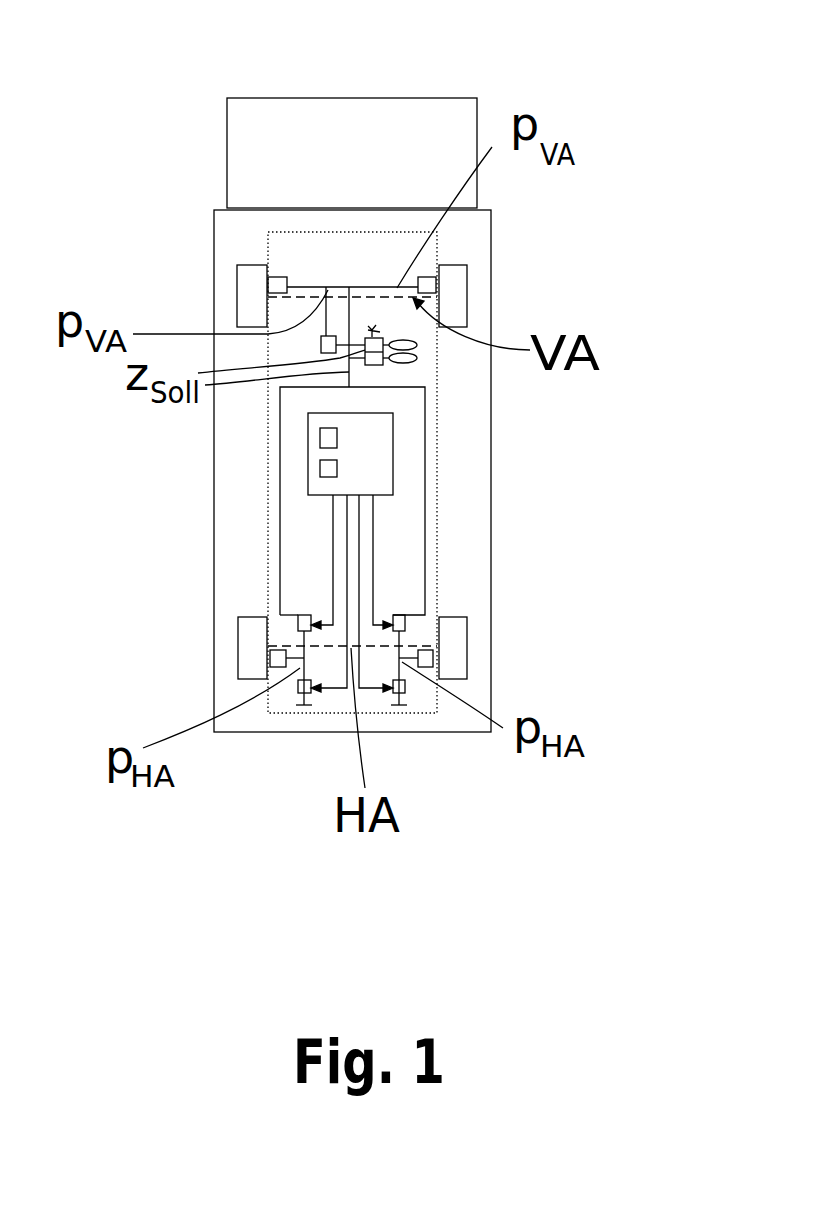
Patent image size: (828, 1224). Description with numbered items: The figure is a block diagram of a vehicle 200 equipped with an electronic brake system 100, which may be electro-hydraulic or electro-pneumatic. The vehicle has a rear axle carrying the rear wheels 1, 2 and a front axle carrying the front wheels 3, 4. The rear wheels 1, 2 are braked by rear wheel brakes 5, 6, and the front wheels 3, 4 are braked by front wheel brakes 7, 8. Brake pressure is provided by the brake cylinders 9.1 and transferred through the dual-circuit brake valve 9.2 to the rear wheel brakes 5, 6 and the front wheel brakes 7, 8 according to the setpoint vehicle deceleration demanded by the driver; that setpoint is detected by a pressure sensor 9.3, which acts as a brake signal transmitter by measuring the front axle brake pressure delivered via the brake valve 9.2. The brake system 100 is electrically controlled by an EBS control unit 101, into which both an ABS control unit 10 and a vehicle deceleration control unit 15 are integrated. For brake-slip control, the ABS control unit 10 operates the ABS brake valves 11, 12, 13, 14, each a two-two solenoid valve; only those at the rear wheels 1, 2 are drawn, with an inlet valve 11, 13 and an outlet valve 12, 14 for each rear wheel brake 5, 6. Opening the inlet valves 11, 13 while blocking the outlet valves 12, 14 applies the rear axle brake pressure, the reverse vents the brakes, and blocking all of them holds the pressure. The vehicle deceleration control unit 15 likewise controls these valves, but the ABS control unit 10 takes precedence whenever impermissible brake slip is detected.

The vehicle 200 is at (313, 97).
The brake system 100 is at (384, 232).
The rear wheel 1 is at (237, 616).
The rear wheel 2 is at (467, 616).
The front wheel 3 is at (237, 262).
The front wheel 4 is at (467, 265).
The rear wheel brake 5 is at (264, 662).
The rear wheel brake 6 is at (440, 661).
The front wheel brake 7 is at (262, 287).
The front wheel brake 8 is at (442, 287).
The brake cylinders 9.1 is at (399, 328).
The dual-circuit brake valve 9.2 is at (373, 365).
The pressure sensor 9.3 is at (326, 300).
The ABS control unit 10 is at (320, 438).
The EBS control unit 101 is at (308, 479).
The vehicle deceleration control unit 15 is at (337, 467).
The inlet valve 11 is at (298, 620).
The outlet valve 12 is at (298, 690).
The inlet valve 13 is at (405, 620).
The outlet valve 14 is at (405, 690).